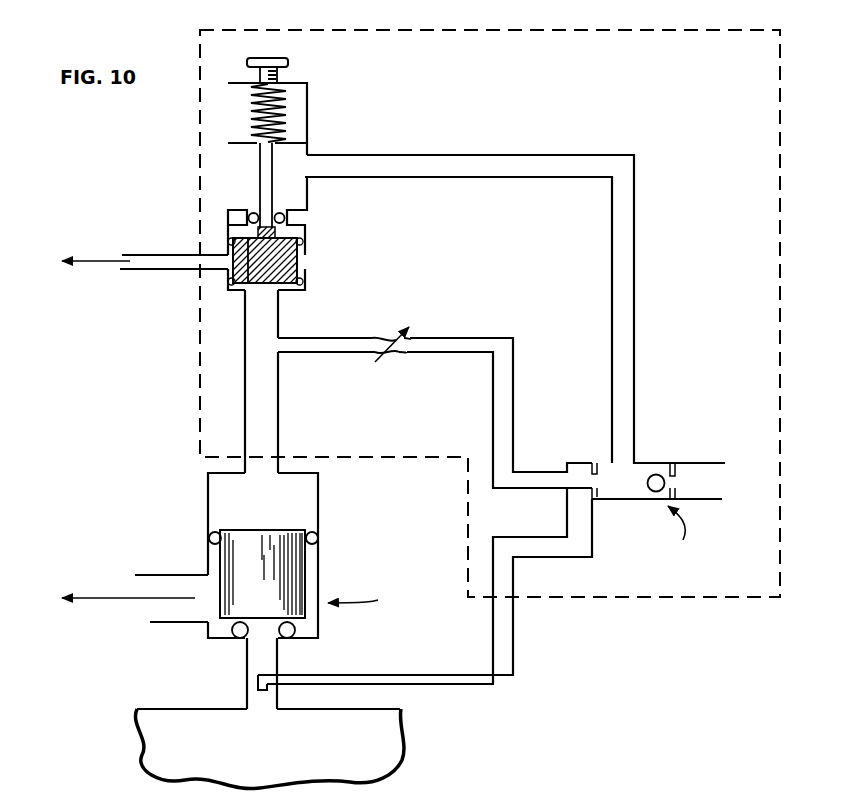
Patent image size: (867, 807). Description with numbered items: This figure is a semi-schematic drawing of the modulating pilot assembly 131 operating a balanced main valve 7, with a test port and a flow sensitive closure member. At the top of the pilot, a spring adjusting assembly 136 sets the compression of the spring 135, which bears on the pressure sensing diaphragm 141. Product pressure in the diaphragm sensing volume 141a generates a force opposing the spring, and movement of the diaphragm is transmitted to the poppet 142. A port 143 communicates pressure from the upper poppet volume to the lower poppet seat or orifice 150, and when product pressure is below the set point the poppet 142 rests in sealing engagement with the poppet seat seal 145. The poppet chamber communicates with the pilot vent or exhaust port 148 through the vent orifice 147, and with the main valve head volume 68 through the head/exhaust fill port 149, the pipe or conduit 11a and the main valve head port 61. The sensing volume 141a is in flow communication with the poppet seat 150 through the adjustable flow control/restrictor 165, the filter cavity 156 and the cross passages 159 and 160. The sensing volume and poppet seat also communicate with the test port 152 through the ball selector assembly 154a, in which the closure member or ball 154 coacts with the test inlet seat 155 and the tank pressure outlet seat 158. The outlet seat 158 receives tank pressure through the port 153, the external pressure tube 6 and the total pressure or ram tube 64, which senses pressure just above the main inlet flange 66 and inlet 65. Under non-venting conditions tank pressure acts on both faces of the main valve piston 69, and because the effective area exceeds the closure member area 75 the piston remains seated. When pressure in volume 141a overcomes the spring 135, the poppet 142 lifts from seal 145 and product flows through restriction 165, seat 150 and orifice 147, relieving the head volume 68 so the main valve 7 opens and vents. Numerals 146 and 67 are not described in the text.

The pilot assembly 131 is at (222, 28).
The spring adjusting assembly 136 is at (303, 57).
The spring 135 is at (279, 99).
The diaphragm sensing volume 141a is at (292, 110).
The pressure sensing diaphragm 141 is at (291, 142).
The port 143 is at (230, 231).
The seal rings 146 is at (285, 218).
The poppet seat seal 145 is at (303, 242).
The poppet 142 is at (292, 268).
The pilot vent or exhaust port 148 is at (182, 255).
The lower poppet seat or orifice 150 is at (262, 300).
The head/exhaust fill port 149 is at (247, 347).
The pipe or conduit 11a is at (278, 387).
The passage 160 is at (452, 340).
The flow control/restrictor 165 is at (398, 362).
The passage 159 is at (634, 245).
The port 153 is at (697, 462).
The test inlet seat 155 is at (683, 484).
The test port 152 is at (720, 490).
The filter cavity 156 is at (625, 503).
The closure member or ball 154 is at (655, 492).
The ball selector assembly 154a is at (695, 537).
The tank pressure outlet seat 158 is at (608, 500).
The external pressure tube 6 is at (510, 665).
The main valve head volume 68 is at (318, 508).
The main valve head port 61 is at (258, 472).
The housing wall 67 is at (198, 558).
The main valve piston 69 is at (285, 582).
The main valve 7 is at (357, 590).
The vent orifice 147 is at (184, 618).
The main valve closure member area 75 is at (250, 637).
The total pressure or ram tube 64 is at (256, 682).
The inlet 65 is at (262, 710).
The main inlet flange 66 is at (170, 712).